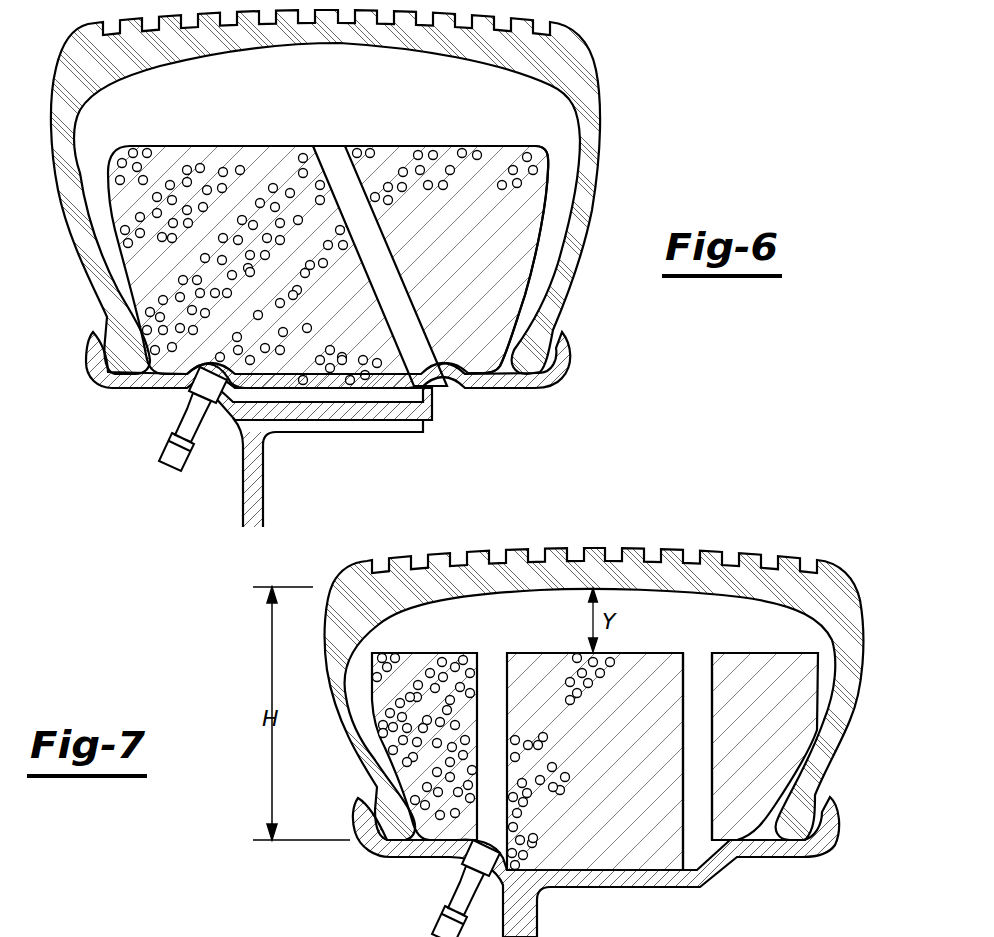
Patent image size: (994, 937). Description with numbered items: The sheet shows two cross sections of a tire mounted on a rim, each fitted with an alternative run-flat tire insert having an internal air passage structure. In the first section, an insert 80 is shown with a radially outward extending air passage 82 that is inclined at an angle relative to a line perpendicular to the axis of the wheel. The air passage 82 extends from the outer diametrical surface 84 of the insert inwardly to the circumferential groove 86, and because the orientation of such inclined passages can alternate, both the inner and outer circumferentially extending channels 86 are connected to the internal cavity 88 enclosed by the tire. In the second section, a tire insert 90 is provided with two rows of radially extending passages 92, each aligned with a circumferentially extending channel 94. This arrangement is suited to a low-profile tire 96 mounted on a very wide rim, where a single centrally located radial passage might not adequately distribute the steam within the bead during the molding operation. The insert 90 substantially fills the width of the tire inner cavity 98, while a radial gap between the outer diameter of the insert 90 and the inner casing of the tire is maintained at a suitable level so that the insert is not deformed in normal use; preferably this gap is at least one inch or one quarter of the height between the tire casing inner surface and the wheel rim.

In FIG. 6, the insert 80 is at (530, 195).
In FIG. 7, the insert 80 is at (121, 935).
In FIG. 6, the air passage 82 is at (405, 272).
In FIG. 6, the outer diametrical surface 84 is at (403, 146).
In FIG. 6, the circumferential groove 86 is at (190, 375).
In FIG. 6, the internal cavity 88 is at (332, 104).
In FIG. 7, the tire insert 90 is at (785, 695).
In FIG. 7, the radially extending passages 92 is at (715, 764).
In FIG. 7, the circumferentially extending channel 94 is at (708, 843).
In FIG. 7, the low-profile tire 96 is at (646, 546).
In FIG. 7, the tire inner cavity 98 is at (717, 635).